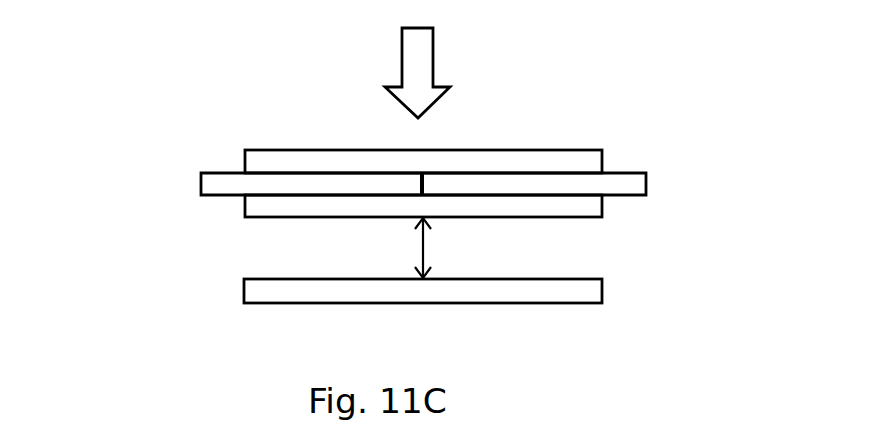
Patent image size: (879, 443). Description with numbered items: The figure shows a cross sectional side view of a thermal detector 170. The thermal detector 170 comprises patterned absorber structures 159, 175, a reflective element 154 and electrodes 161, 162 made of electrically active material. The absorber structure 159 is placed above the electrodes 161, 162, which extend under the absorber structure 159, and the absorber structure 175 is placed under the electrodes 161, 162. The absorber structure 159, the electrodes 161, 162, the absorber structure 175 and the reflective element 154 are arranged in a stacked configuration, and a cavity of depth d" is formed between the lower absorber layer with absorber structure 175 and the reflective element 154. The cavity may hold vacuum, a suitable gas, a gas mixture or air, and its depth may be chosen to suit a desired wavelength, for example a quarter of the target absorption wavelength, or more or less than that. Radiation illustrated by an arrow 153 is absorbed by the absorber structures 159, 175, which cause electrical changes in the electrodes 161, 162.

The thermal detector 170 is at (140, 62).
The arrow 153 is at (433, 53).
The reflective element 154 is at (281, 280).
The absorber structure 159 is at (276, 150).
The electrode 161 is at (207, 170).
The electrode 162 is at (620, 166).
The absorber structure 175 is at (592, 218).